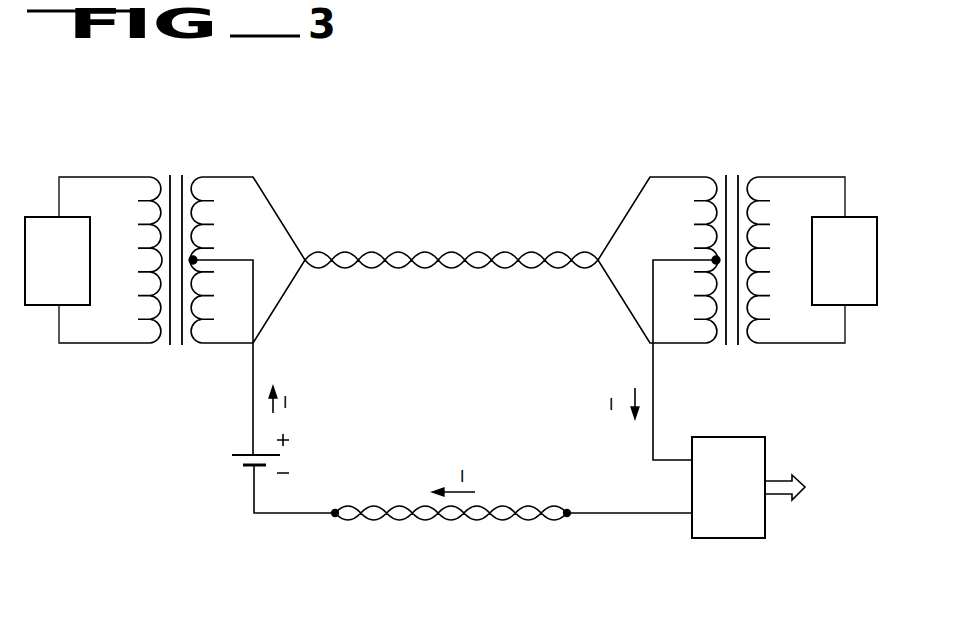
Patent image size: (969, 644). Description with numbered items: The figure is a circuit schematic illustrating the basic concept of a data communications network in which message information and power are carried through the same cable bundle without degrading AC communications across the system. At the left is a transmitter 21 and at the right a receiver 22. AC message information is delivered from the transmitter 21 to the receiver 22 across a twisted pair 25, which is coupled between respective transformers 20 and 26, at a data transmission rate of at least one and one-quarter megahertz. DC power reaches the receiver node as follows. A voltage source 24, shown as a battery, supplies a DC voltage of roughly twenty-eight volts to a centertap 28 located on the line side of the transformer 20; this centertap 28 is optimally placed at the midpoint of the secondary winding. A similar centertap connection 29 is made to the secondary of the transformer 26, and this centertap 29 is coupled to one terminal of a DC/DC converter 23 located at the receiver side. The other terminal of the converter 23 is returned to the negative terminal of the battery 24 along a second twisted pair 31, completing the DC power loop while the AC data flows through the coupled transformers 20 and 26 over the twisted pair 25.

The transformer 20 is at (225, 358).
The transmitter 21 is at (68, 295).
The receiver 22 is at (857, 295).
The DC/DC converter 23 is at (740, 524).
The voltage source 24 is at (230, 462).
The twisted pair 25 is at (425, 253).
The transformer 26 is at (780, 358).
The centertap 28 is at (198, 257).
The centertap connection 29 is at (711, 257).
The twisted pair 31 is at (472, 521).